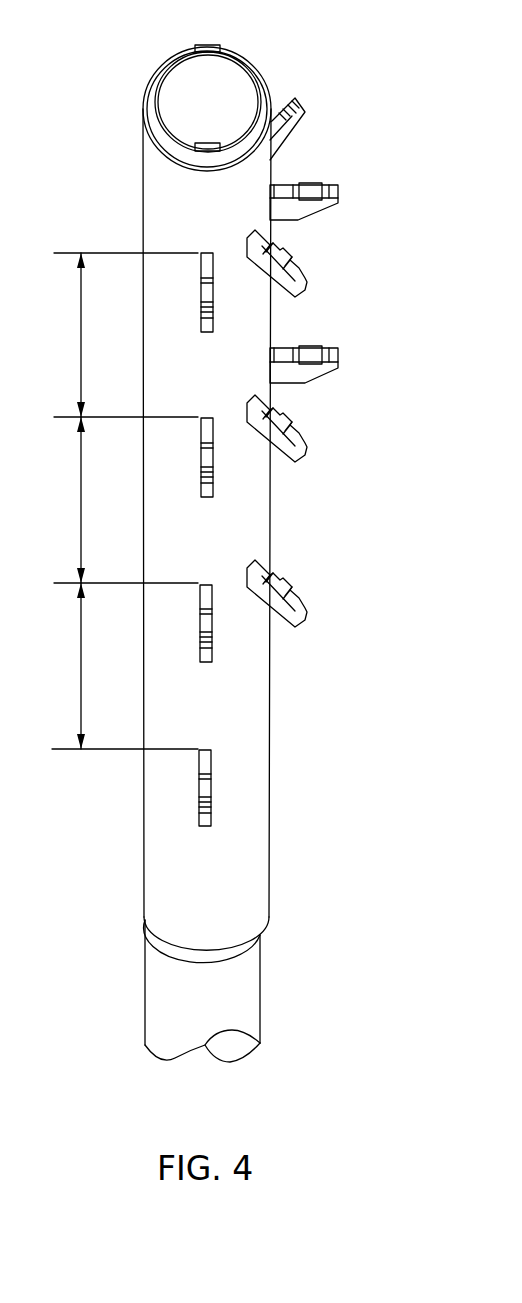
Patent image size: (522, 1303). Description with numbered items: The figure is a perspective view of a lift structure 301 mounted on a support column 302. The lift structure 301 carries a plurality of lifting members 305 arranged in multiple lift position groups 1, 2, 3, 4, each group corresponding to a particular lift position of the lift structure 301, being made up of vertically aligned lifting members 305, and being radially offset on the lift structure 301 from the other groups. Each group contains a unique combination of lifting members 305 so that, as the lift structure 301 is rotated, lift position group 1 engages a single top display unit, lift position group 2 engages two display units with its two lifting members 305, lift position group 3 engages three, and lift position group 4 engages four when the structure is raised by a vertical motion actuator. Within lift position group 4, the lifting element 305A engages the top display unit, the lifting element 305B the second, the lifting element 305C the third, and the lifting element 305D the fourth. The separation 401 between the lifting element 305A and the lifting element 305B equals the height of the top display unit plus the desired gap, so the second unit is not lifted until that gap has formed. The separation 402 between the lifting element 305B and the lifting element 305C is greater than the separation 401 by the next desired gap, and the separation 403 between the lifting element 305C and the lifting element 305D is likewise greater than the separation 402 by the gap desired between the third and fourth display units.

The lift position group 1 is at (287, 92).
The lift position group 2 is at (332, 388).
The lift position group 3 is at (283, 640).
The lift position group 4 is at (216, 841).
The lift structure 301 is at (210, 219).
The support column 302 is at (260, 982).
The lifting member 305 is at (306, 110).
The lifting element 305A is at (214, 290).
The lifting element 305B is at (214, 455).
The lifting element 305C is at (213, 625).
The lifting element 305D is at (199, 787).
The separation 401 is at (78, 352).
The separation 402 is at (78, 503).
The separation 403 is at (78, 672).